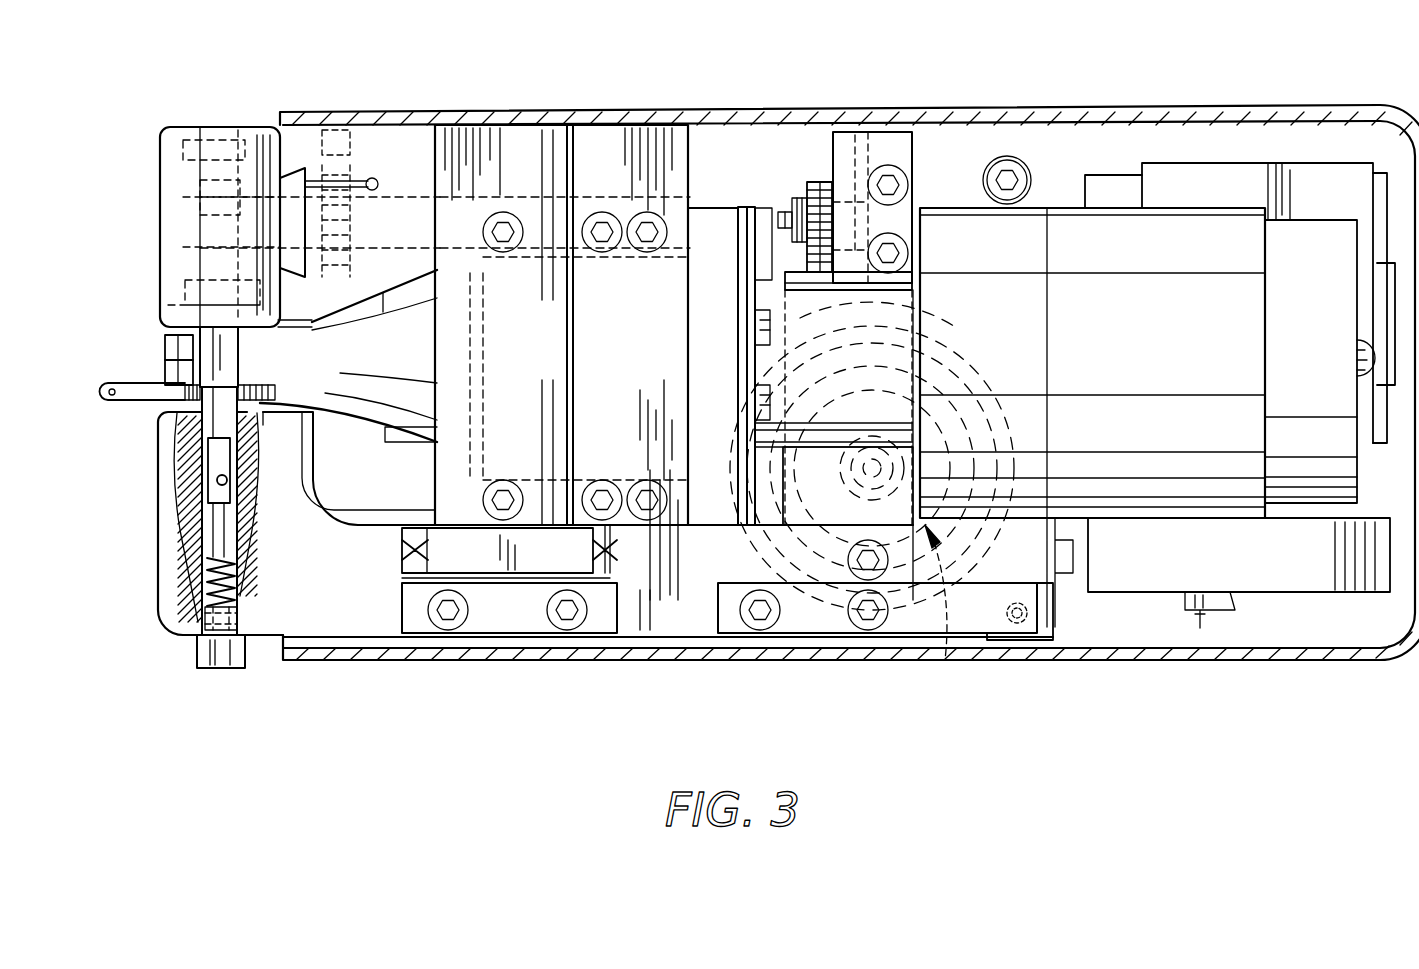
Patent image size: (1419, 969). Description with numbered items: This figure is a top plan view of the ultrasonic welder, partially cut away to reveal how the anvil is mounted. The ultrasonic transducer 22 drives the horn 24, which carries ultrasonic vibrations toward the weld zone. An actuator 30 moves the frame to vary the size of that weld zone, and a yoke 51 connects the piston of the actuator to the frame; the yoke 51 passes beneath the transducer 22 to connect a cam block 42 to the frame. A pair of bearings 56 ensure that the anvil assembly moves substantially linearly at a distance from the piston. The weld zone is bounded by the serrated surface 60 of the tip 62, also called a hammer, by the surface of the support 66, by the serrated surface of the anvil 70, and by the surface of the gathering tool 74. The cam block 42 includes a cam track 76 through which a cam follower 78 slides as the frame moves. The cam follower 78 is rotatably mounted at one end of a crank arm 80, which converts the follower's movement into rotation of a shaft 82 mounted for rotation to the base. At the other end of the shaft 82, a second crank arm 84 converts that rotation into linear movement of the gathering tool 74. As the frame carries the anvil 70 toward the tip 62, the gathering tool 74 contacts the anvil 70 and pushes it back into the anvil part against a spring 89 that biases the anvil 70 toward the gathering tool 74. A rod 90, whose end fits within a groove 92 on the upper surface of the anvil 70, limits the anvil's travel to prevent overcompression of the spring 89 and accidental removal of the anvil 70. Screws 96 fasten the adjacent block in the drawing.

The ultrasonic transducer 22 is at (1130, 350).
The horn 24 is at (405, 372).
The actuator 30 is at (942, 668).
The cam block 42 is at (915, 210).
The yoke 51 is at (913, 302).
The bearings 56 is at (410, 556).
The surface of tip 60 is at (168, 358).
The tip 62 is at (172, 333).
The support 66 is at (172, 580).
The anvil 70 is at (265, 404).
The gathering tool 74 is at (235, 345).
The cam track 76 is at (855, 128).
The cam follower 78 is at (885, 128).
The crank arm 80 is at (817, 197).
The shaft 82 is at (407, 227).
The second crank arm 84 is at (200, 265).
The spring 89 is at (240, 585).
The rod 90 is at (228, 482).
The groove 92 is at (215, 450).
The screws 96 is at (905, 175).